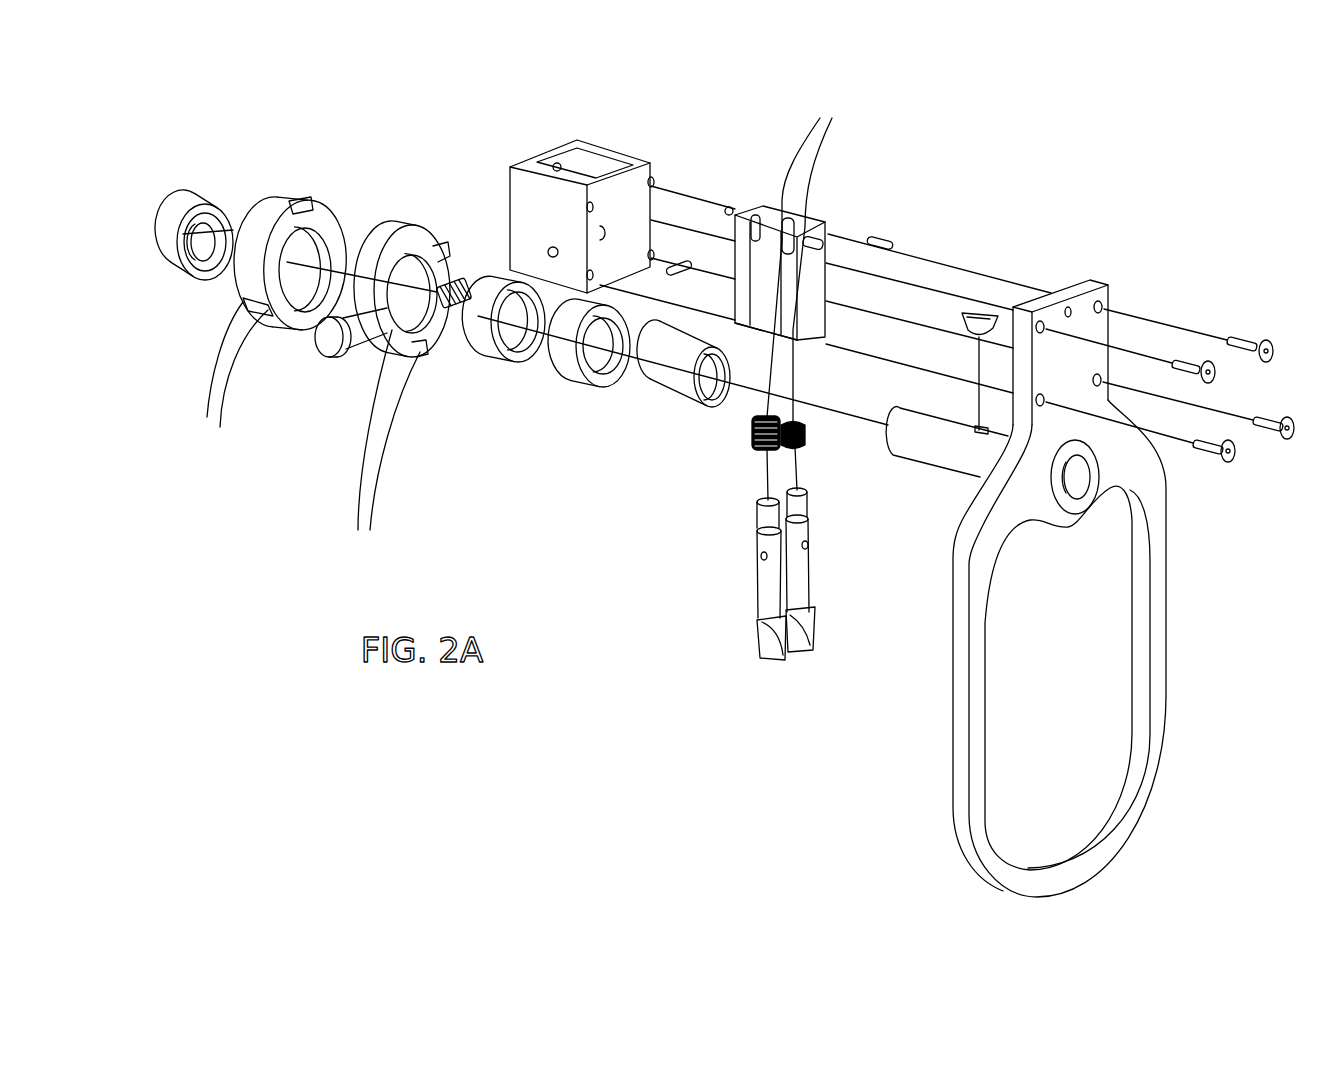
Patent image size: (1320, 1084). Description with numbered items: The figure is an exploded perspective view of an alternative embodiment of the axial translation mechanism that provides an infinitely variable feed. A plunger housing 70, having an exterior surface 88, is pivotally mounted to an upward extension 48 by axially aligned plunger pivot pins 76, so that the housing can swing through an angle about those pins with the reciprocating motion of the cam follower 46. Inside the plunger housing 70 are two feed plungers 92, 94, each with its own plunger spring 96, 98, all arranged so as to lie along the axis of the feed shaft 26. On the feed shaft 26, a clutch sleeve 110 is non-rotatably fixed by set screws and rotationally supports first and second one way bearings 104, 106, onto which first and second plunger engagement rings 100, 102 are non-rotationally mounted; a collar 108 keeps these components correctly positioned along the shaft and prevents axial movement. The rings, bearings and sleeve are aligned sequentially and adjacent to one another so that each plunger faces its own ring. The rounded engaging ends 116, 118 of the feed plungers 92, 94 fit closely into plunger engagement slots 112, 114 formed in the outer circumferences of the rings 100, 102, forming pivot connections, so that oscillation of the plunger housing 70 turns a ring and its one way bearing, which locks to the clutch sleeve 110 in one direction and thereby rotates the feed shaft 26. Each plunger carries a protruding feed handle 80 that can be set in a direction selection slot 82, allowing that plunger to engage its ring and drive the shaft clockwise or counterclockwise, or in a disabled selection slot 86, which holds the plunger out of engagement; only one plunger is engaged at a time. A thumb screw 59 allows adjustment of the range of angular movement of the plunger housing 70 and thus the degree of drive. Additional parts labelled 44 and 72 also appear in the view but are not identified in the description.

The feed shaft 26 is at (938, 462).
The handle frame 44 is at (1102, 648).
The cam follower 46 is at (988, 683).
The upward extension 48 is at (1090, 327).
The thumb screw 59 is at (315, 354).
The plunger housing 70 is at (808, 323).
The bracket 72 is at (510, 227).
The plunger pivot pins 76 is at (731, 207).
The feed handle 80 is at (682, 262).
The direction selection slot 82 is at (790, 338).
The disabled or disengaged selection slot 86 is at (806, 257).
The exterior surface 88 is at (793, 302).
The feed plunger 92 is at (757, 607).
The feed plunger 94 is at (810, 562).
The plunger spring 96 is at (750, 436).
The plunger spring 98 is at (806, 436).
The first plunger engagement ring 100 is at (305, 208).
The second plunger engagement ring 102 is at (390, 243).
The first one way bearing 104 is at (510, 370).
The second one way bearing 106 is at (578, 378).
The collar 108 is at (177, 272).
The clutch sleeve 110 is at (645, 386).
The plunger engagement slots 112 is at (227, 381).
The plunger engagement slots 114 is at (383, 449).
The engaging end 116 is at (758, 651).
The engaging end 118 is at (803, 650).